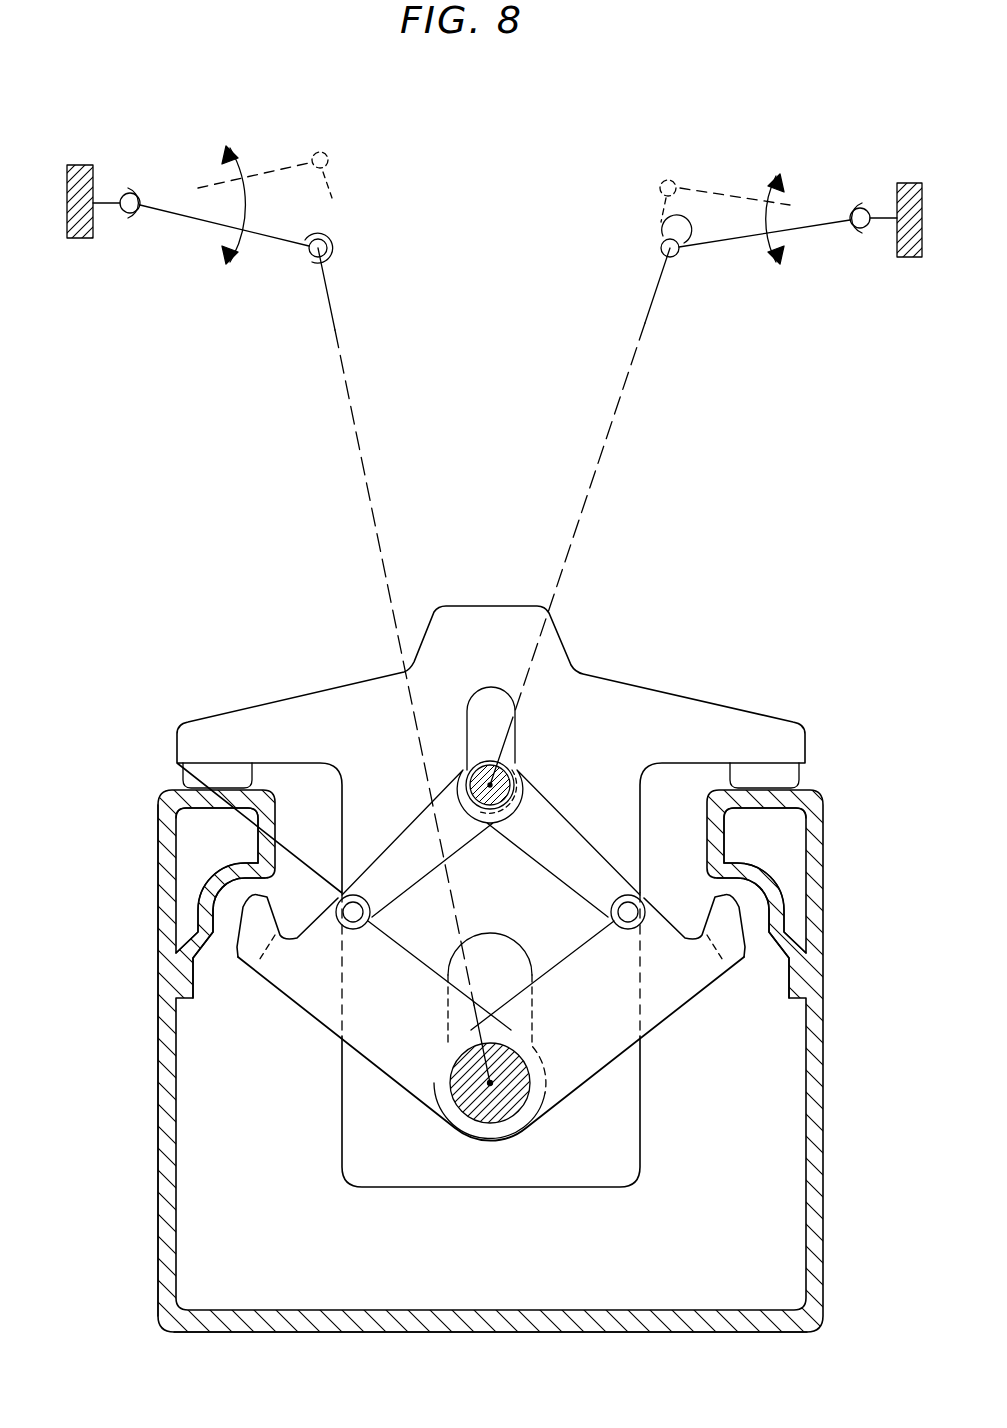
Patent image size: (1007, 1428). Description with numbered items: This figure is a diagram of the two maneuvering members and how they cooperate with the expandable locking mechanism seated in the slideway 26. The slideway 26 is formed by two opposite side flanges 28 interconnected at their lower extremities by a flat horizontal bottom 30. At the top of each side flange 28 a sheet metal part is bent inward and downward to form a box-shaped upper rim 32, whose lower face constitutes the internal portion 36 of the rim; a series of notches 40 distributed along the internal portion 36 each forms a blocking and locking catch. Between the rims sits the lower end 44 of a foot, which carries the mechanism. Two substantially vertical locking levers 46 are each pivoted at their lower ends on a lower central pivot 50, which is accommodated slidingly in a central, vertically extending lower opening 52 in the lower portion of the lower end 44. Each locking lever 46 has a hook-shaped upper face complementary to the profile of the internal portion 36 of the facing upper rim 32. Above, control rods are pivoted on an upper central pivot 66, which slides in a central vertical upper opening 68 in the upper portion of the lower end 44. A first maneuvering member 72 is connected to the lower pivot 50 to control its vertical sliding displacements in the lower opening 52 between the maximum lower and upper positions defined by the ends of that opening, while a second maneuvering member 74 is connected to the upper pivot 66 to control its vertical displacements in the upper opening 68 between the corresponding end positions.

The slideway 26 is at (138, 1060).
The side flange 28 is at (168, 1103).
The flat horizontal bottom 30 is at (343, 1318).
The upper rim 32 is at (236, 848).
The internal portion 36 is at (755, 898).
The notch 40 is at (200, 882).
The lower end of foot 44 is at (640, 708).
The locking lever 46 is at (404, 1040).
The lower central pivot 50 is at (508, 1102).
The lower opening 52 is at (532, 994).
The upper central pivot 66 is at (505, 782).
The upper opening 68 is at (468, 716).
The first maneuvering member 72 is at (350, 262).
The second maneuvering member 74 is at (690, 280).